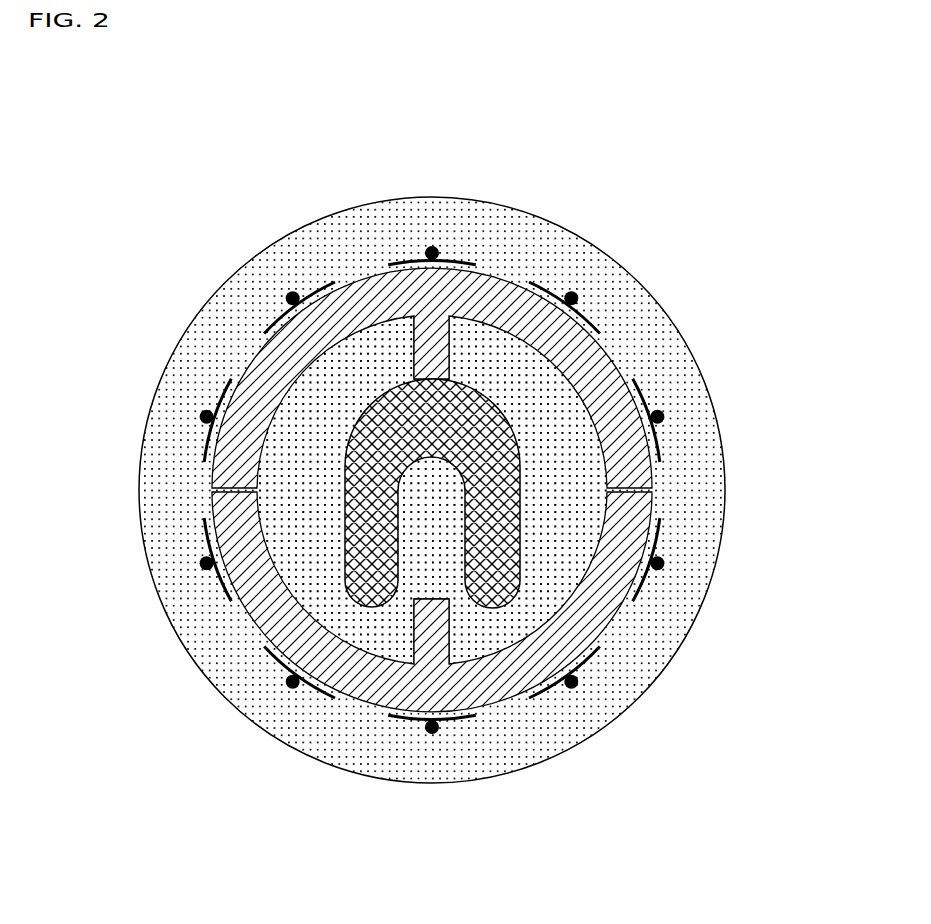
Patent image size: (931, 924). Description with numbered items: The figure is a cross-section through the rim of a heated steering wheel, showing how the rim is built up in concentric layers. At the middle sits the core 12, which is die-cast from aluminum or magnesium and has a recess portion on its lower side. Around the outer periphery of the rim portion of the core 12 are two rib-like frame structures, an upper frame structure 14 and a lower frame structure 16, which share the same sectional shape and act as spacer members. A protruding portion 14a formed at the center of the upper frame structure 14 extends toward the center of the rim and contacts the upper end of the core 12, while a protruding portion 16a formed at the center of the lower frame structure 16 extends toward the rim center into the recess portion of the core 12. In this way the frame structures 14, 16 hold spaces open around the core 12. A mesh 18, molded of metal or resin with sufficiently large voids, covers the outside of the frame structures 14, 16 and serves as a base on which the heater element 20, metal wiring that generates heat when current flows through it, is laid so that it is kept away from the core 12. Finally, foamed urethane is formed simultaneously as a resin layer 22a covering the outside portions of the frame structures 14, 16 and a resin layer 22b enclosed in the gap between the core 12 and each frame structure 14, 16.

The core 12 is at (362, 552).
The upper frame structure 14 is at (263, 367).
The protruding portion 14a is at (427, 352).
The lower frame structure 16 is at (362, 692).
The protruding portion 16a is at (450, 627).
The mesh 18 is at (648, 397).
The heater element 20 is at (664, 560).
The resin layer 22a is at (592, 272).
The resin layer 22b is at (293, 442).